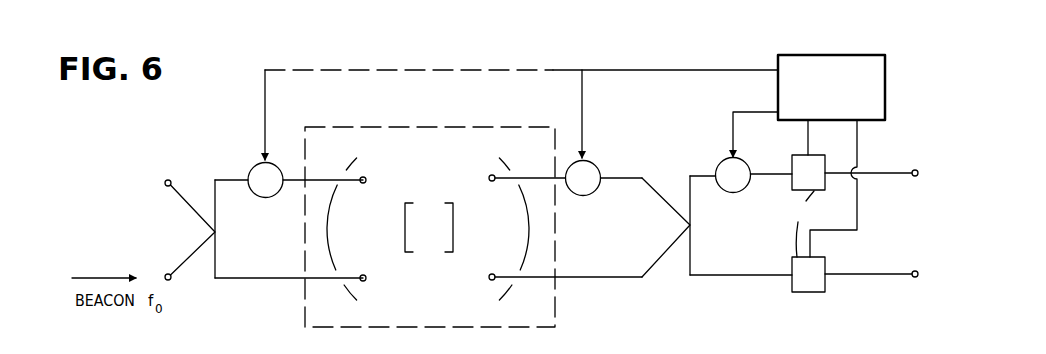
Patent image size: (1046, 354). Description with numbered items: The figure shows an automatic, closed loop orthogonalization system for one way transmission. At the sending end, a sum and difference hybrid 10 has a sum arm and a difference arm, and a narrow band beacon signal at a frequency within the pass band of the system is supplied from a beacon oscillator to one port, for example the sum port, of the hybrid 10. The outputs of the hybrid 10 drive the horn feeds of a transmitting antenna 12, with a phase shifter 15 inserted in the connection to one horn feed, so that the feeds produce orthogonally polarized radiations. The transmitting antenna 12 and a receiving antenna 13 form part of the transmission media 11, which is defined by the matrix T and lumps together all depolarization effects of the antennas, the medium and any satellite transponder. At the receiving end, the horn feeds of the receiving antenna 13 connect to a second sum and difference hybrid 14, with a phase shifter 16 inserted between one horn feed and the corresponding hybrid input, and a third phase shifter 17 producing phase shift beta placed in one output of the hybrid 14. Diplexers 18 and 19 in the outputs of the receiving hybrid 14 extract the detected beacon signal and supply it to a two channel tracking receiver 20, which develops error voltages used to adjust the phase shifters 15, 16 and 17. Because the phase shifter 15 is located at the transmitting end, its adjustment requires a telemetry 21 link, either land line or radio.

The sum and difference hybrid 10 is at (198, 178).
The transmission media 11 is at (495, 126).
The transmitting antenna 12 is at (329, 222).
The receiving antenna 13 is at (525, 211).
The sum and difference hybrid 14 is at (676, 180).
The phase shifter 15 is at (270, 197).
The phase shifter 16 is at (593, 194).
The phase shifter 17 is at (720, 186).
The diplexer 18 is at (828, 258).
The diplexer 19 is at (830, 191).
The two channel tracking receiver 20 is at (886, 72).
The telemetry 21 is at (500, 70).